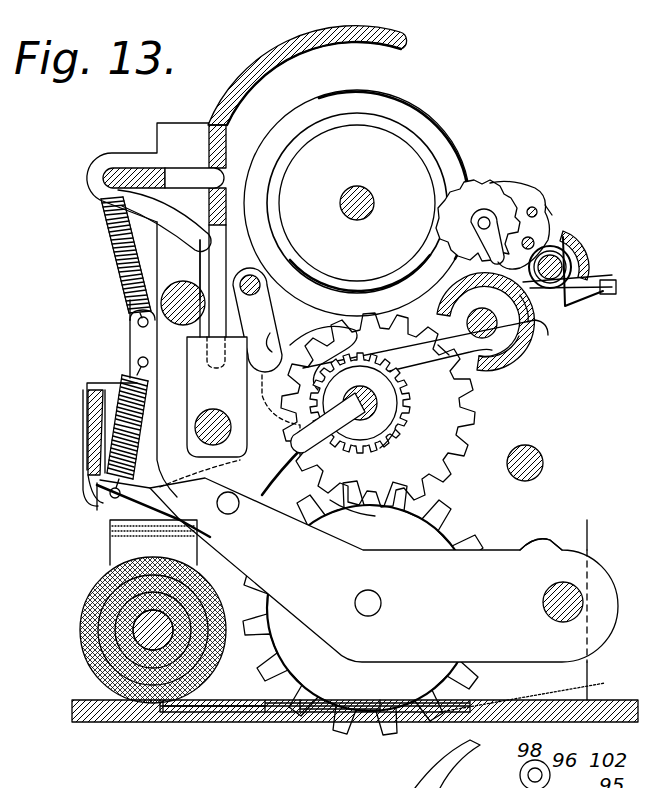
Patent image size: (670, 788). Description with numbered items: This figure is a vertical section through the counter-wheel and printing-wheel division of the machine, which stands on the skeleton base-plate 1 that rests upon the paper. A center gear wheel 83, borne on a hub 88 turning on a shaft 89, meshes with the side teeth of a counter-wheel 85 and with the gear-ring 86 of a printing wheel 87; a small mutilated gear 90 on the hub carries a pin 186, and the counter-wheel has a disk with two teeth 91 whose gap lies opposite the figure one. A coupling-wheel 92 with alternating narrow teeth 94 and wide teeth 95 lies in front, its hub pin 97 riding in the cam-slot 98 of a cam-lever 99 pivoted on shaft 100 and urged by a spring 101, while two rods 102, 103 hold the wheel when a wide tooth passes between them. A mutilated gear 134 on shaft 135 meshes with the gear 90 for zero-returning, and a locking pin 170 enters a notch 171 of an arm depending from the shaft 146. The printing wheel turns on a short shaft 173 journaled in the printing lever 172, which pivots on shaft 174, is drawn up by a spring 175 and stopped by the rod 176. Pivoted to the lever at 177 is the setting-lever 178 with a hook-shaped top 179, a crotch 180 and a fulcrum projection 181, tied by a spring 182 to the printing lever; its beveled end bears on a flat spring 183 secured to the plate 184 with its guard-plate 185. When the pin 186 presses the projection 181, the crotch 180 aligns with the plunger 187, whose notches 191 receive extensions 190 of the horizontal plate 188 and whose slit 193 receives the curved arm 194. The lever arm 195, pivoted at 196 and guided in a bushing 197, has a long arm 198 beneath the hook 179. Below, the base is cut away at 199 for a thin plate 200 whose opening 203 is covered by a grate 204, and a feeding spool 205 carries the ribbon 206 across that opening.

The base-plate 1 is at (355, 727).
The center gear wheel 83 is at (442, 414).
The counter-wheel 85 is at (410, 108).
The gear-ring 86 is at (455, 540).
The printing wheel 87 is at (428, 520).
The hub 88 is at (395, 392).
The shaft 89 is at (402, 442).
The mutilated gear 90 is at (408, 405).
The teeth 91 is at (472, 182).
The coupling-wheel 92 is at (502, 200).
The narrow tooth 94 is at (468, 212).
The wide tooth 95 is at (480, 196).
The pin 97 is at (480, 226).
The cam-slot 98 is at (470, 320).
The cam-lever 99 is at (528, 305).
The shaft 100 is at (590, 255).
The spring 101 is at (588, 300).
The rod 102 is at (548, 213).
The rod 103 is at (578, 232).
The mutilated gear 134 is at (105, 425).
The shaft 135 is at (228, 398).
The shaft 146 is at (258, 280).
The pin 170 is at (315, 446).
The notch 171 is at (188, 359).
The printing lever 172 is at (248, 330).
The short shaft 173 is at (374, 612).
The shaft 174 is at (548, 615).
The spring 175 is at (125, 256).
The rod 176 is at (192, 284).
The pivot 177 is at (232, 512).
The setting-lever 178 is at (279, 415).
The hook-shaped top 179 is at (322, 362).
The crotch 180 is at (262, 340).
The fulcrum projection 181 is at (350, 394).
The spring 182 is at (138, 378).
The flat spring 183 is at (100, 528).
The plate 184 is at (100, 457).
The guard-plate 185 is at (84, 498).
The pin 186 is at (364, 486).
The plunger 187 is at (262, 50).
The horizontal plate 188 is at (135, 172).
The extension 190 is at (191, 170).
The notch 191 is at (236, 168).
The slit 193 is at (222, 250).
The curved arm 194 is at (160, 220).
The lever arm 195 is at (425, 354).
The pivot 196 is at (522, 345).
The bushing 197 is at (538, 340).
The long arm 198 is at (345, 330).
The cut-away 199 is at (170, 712).
The plate 200 is at (298, 722).
The opening 203 is at (398, 716).
The grate 204 is at (268, 718).
The feeding spool 205 is at (82, 655).
The ribbon 206 is at (560, 700).